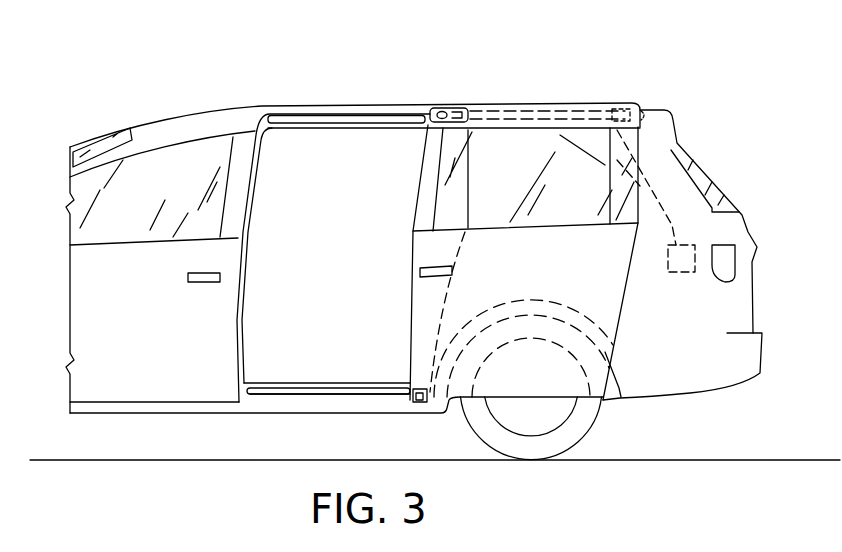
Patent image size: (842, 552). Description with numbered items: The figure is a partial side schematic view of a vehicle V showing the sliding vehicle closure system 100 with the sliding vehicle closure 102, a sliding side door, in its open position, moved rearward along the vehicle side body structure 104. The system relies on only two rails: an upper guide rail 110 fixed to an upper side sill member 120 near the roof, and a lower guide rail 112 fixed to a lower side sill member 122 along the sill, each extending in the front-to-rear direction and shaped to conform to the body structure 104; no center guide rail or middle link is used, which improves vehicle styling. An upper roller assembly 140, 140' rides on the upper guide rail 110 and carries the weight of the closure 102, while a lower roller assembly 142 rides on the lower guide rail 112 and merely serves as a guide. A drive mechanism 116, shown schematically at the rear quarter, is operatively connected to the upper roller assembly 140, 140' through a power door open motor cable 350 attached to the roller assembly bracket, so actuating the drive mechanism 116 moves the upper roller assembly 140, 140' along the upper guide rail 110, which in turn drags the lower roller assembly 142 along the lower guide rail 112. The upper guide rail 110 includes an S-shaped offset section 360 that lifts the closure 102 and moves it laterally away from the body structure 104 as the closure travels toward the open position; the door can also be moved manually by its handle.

The vehicle V is at (659, 68).
The sliding vehicle closure system 100 is at (395, 292).
The sliding vehicle closure 102 is at (409, 318).
The vehicle side body structure 104 is at (252, 123).
The upper guide rail 110 is at (314, 112).
The lower guide rail 112 is at (295, 393).
The drive mechanism 116 is at (675, 272).
The upper side sill member 120 is at (337, 131).
The lower side sill member 122 is at (272, 394).
The upper roller assembly 140 is at (463, 72).
The upper roller assembly 140' is at (595, 76).
The lower roller assembly 142 is at (417, 415).
The power door open motor cable 350 is at (668, 224).
The offset section 360 is at (468, 110).